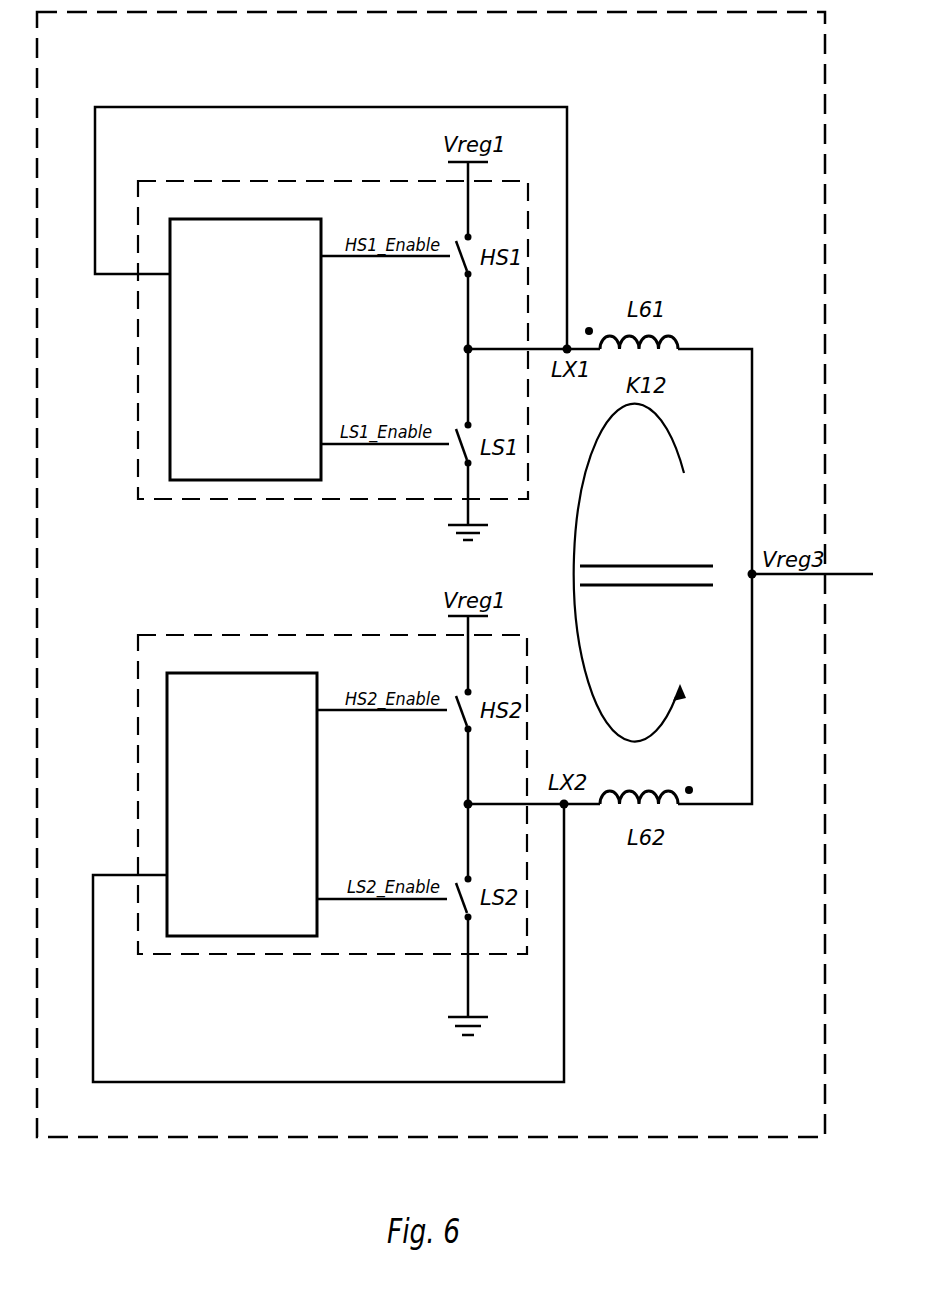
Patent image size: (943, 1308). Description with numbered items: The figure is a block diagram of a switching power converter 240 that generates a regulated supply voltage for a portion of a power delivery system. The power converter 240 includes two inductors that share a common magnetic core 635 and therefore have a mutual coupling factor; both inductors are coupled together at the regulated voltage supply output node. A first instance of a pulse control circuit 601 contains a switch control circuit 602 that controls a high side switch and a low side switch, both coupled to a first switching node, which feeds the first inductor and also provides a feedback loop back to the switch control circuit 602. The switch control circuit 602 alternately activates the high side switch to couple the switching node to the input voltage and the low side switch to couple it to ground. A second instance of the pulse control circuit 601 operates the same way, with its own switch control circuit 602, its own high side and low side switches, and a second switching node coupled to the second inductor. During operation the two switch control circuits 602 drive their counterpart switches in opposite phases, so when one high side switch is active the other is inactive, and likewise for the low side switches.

The power converter 240 is at (431, 574).
The pulse control circuit 601 is at (333, 567).
The switch control circuit 602 is at (244, 577).
The magnetic core 635 is at (615, 558).